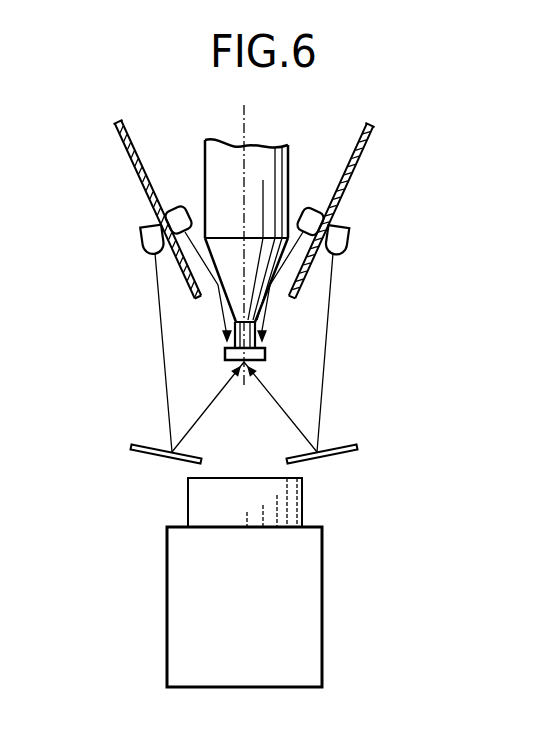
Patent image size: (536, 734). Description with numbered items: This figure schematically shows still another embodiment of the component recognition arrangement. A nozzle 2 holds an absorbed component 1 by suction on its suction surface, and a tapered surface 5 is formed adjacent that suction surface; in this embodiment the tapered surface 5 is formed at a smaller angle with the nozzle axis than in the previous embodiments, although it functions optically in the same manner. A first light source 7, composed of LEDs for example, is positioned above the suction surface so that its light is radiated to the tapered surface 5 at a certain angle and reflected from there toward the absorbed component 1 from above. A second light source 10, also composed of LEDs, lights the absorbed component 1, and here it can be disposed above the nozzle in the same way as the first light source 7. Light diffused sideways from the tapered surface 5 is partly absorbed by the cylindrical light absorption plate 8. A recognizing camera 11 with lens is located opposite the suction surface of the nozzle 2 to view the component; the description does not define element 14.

The absorbed component 1 is at (225, 355).
The nozzle 2 is at (267, 160).
The tapered surface 5 is at (261, 312).
The first light source 7 is at (181, 208).
The light absorption plate 8 is at (120, 140).
The second light source 10 is at (142, 238).
The recognizing camera 11 is at (307, 612).
The mirror 14 is at (150, 444).